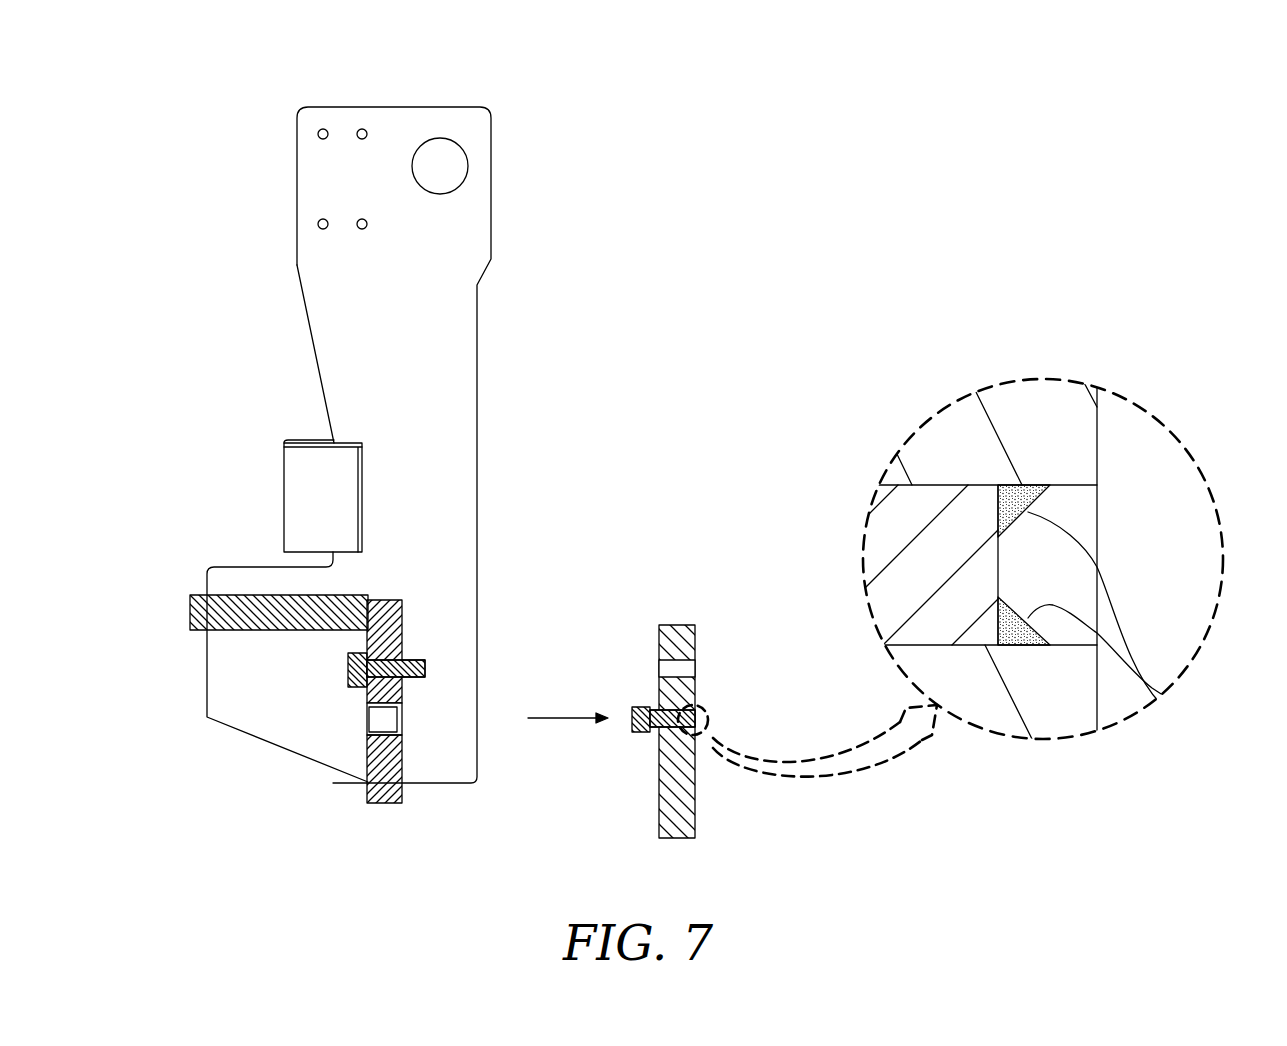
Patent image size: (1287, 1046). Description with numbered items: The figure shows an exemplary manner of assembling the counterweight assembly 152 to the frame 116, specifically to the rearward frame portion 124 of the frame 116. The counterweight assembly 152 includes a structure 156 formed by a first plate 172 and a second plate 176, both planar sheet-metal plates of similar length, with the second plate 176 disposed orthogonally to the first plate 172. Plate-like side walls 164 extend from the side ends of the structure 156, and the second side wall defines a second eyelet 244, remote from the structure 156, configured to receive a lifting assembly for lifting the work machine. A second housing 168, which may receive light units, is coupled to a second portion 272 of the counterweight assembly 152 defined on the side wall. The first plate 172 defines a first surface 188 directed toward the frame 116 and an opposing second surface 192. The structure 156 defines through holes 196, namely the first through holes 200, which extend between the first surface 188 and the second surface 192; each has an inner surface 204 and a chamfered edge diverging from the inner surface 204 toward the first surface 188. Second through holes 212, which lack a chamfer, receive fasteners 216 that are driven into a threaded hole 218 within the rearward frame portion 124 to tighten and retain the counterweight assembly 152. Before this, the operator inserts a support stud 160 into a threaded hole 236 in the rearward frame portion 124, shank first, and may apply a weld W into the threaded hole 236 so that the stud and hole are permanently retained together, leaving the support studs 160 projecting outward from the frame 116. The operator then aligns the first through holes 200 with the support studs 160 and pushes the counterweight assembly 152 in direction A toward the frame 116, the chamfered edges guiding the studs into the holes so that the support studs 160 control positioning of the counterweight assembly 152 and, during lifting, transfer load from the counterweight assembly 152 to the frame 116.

The counterweight assembly 152 is at (186, 95).
The side walls 164 is at (477, 322).
The second eyelet 244 is at (450, 153).
The second housing 168 is at (283, 512).
The second portion 272 is at (322, 438).
The second plate 176 is at (190, 613).
The structure 156 is at (418, 608).
The first plate 172 is at (402, 640).
The second through holes 212 is at (427, 668).
The fasteners 216 is at (348, 663).
The through holes 196 is at (292, 734).
The first through holes 200 is at (292, 734).
The inner surface 204 is at (500, 745).
The second surface 192 is at (368, 757).
The first surface 188 is at (405, 765).
The frame 116 is at (728, 716).
The rearward frame portion 124 is at (695, 640).
The threaded hole 218 is at (695, 673).
The support studs 160 is at (642, 740).
The threaded hole 236 is at (1080, 497).
The weld W is at (1127, 617).
The direction A is at (568, 706).